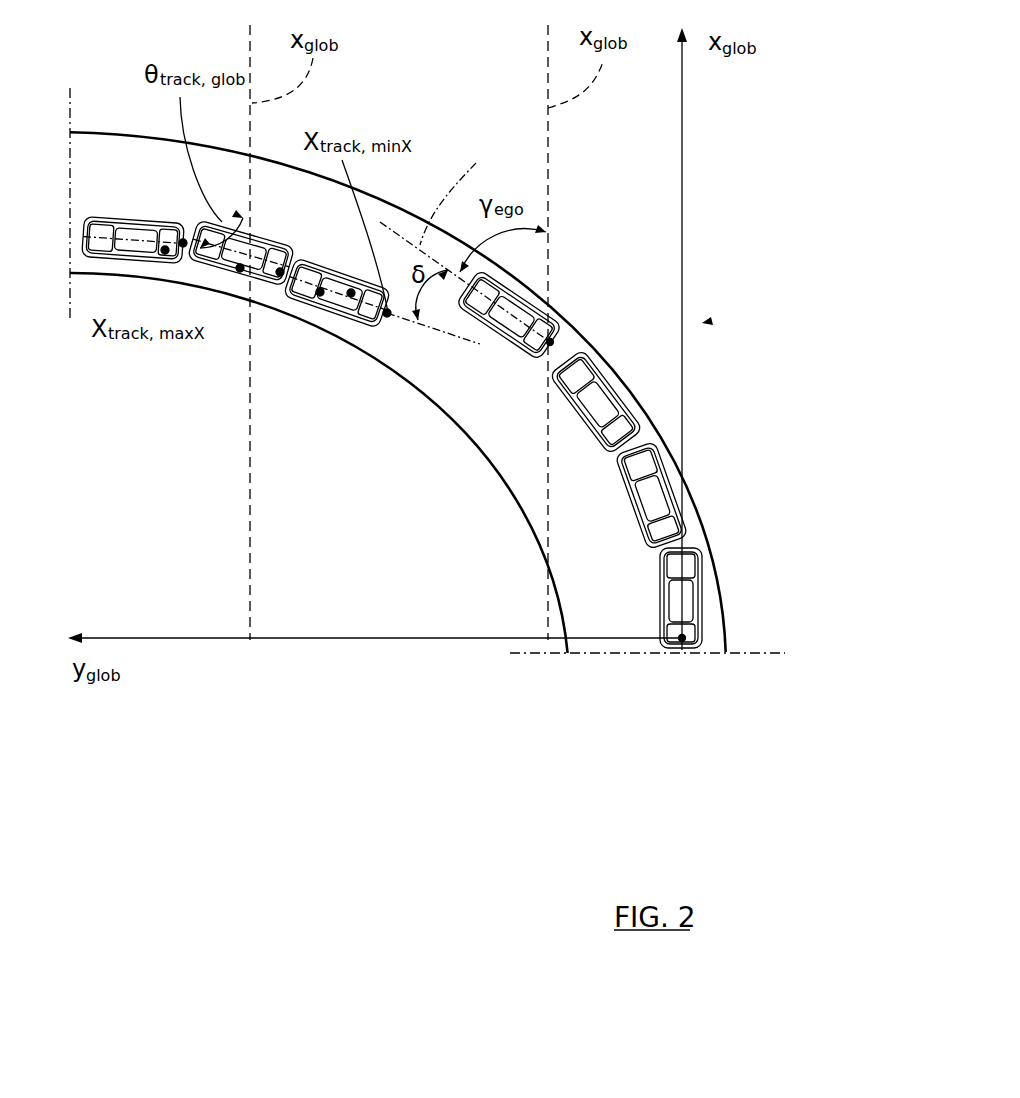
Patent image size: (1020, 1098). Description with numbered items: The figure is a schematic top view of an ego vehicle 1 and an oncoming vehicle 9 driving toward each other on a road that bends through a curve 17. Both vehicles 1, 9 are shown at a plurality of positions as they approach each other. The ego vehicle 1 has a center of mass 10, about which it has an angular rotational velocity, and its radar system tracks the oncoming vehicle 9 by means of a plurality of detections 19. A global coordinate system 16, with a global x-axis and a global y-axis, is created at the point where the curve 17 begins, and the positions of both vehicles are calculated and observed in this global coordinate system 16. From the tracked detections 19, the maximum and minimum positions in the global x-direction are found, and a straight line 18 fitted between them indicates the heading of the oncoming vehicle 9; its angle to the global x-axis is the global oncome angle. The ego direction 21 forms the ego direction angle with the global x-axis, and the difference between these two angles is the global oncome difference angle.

The ego vehicle 1 is at (512, 310).
The oncoming vehicle 9 is at (120, 238).
The center of mass 10 is at (552, 342).
The global coordinate system 16 is at (702, 323).
The curve 17 is at (528, 520).
The straight line 18 is at (444, 333).
The detections 19 is at (183, 246).
The ego direction 21 is at (459, 190).